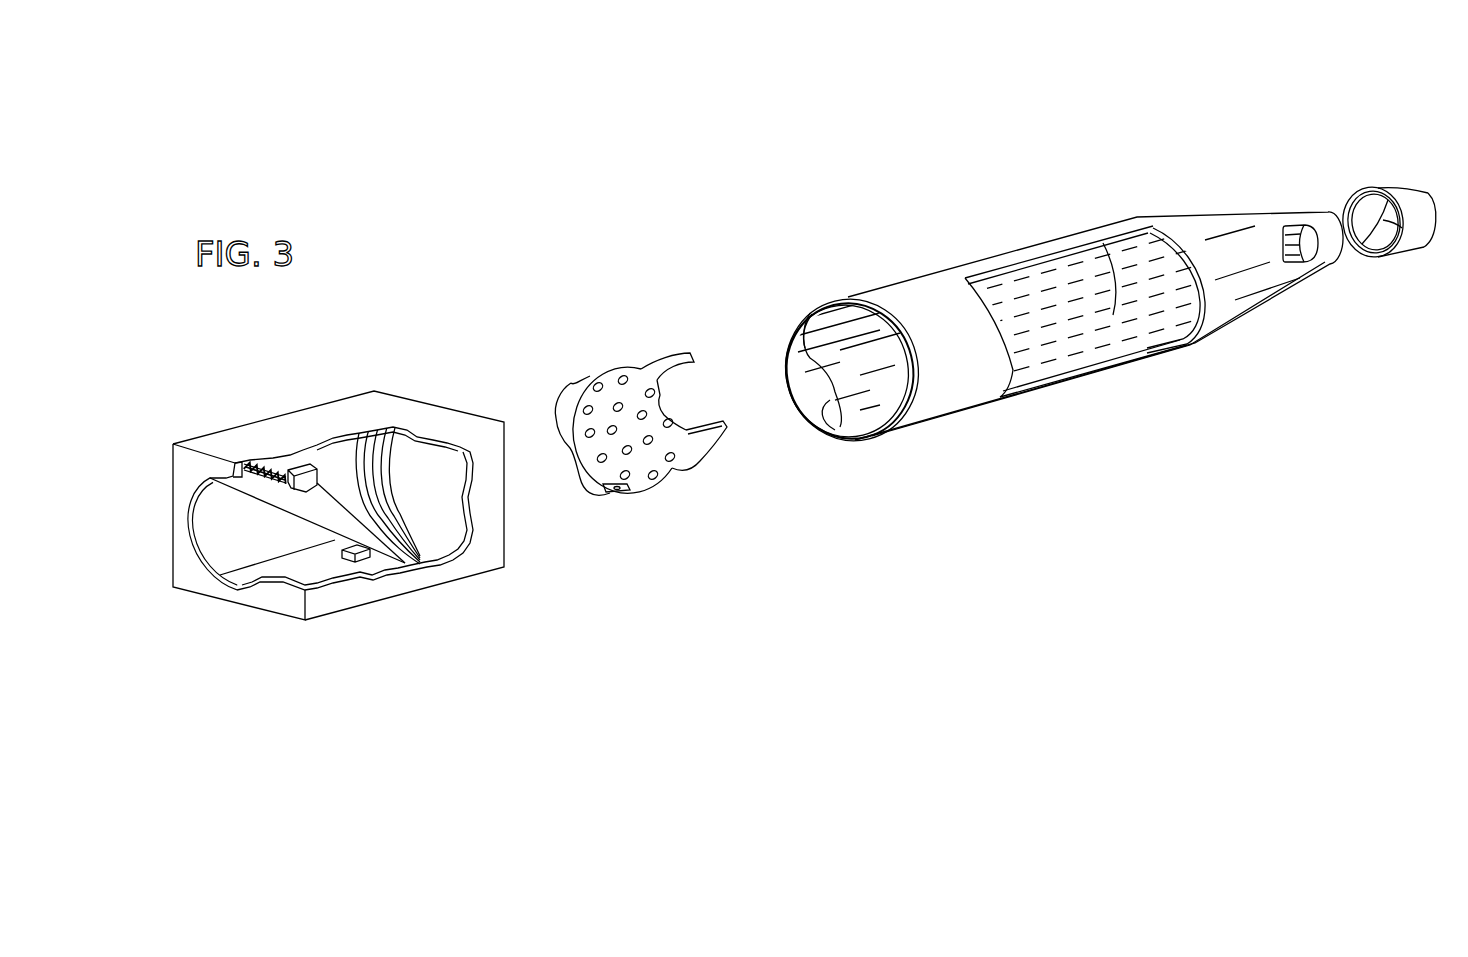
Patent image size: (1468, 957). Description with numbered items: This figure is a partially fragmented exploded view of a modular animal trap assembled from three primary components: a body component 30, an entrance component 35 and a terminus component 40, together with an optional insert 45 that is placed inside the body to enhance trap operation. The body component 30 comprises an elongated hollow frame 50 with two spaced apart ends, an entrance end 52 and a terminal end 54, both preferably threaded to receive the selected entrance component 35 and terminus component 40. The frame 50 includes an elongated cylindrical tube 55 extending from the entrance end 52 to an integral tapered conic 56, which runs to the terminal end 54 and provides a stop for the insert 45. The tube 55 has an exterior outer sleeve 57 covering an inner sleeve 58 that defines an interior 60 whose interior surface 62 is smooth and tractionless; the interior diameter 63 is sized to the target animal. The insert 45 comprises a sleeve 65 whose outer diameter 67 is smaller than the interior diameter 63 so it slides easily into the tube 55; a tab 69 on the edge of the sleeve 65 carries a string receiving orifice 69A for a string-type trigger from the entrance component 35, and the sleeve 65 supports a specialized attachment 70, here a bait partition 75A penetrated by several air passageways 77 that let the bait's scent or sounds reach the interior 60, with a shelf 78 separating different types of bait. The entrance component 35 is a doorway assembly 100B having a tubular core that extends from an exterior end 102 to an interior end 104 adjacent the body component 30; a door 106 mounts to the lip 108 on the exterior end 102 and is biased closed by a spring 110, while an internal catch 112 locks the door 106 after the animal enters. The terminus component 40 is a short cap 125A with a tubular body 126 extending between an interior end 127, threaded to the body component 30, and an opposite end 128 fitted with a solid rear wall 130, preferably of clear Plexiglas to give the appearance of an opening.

The body component 30 is at (1017, 300).
The entrance component 35 is at (326, 488).
The terminus component 40 is at (1388, 217).
The insert 45 is at (792, 370).
The frame 50 is at (1017, 300).
The entrance end 52 is at (862, 312).
The terminal end 54 is at (1335, 235).
The tube 55 is at (960, 395).
The tapered conic 56 is at (1222, 220).
The outer sleeve 57 is at (990, 258).
The inner sleeve 58 is at (832, 410).
The interior 60 is at (785, 355).
The interior surface 62 is at (1075, 319).
The interior diameter 63 is at (790, 348).
The sleeve 65 is at (718, 468).
The outer diameter 67 is at (556, 398).
The tab 69 is at (616, 493).
The string receiving orifice 69A is at (640, 494).
The attachment 70 is at (664, 468).
The bait partition 75A is at (660, 387).
The air passageways 77 is at (607, 380).
The shelf 78 is at (615, 367).
The doorway assembly 100B is at (326, 502).
The exterior end 102 is at (193, 578).
The interior end 104 is at (405, 395).
The door 106 is at (330, 532).
The lip 108 is at (224, 464).
The spring 110 is at (262, 460).
The catch 112 is at (362, 575).
The cap 125A is at (1386, 168).
The tubular body 126 is at (1418, 247).
The interior end 127 is at (1383, 242).
The end 128 is at (1435, 215).
The rear wall 130 is at (1368, 242).